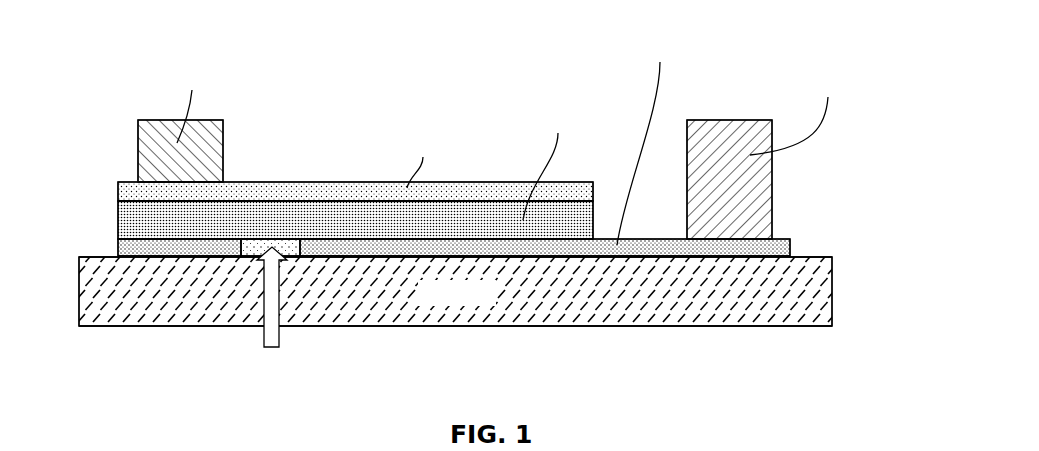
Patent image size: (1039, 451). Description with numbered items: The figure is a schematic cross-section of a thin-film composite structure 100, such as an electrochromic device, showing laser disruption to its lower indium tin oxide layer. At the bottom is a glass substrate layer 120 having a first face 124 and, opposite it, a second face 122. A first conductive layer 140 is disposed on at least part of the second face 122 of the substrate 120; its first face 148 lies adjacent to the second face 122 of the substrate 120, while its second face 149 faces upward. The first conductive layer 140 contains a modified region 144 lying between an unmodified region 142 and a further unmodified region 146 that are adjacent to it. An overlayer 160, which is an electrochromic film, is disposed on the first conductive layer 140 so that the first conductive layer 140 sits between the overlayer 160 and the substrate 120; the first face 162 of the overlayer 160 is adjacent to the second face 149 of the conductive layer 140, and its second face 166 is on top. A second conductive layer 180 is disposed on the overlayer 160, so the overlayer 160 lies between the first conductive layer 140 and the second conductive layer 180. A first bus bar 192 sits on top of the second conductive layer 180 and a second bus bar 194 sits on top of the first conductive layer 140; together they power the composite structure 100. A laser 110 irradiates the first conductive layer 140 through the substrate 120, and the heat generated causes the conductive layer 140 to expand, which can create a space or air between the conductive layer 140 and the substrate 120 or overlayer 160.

The composite structure 100 is at (118, 40).
The laser 110 is at (272, 347).
The substrate layer 120 is at (832, 290).
The second face of the substrate 122 is at (807, 257).
The first face of the substrate 124 is at (780, 326).
The first conductive layer 140 is at (110, 251).
The unmodified region 142 is at (162, 247).
The modified region 144 is at (273, 238).
The unmodified region 146 is at (547, 248).
The first face of the first conductive layer 148 is at (325, 258).
The second face of the first conductive layer 149 is at (318, 237).
The overlayer 160 is at (110, 222).
The first face of the overlayer 162 is at (178, 240).
The second face of the overlayer 166 is at (233, 200).
The second conductive layer 180 is at (110, 186).
The first bus bar 192 is at (138, 152).
The second bus bar 194 is at (772, 193).